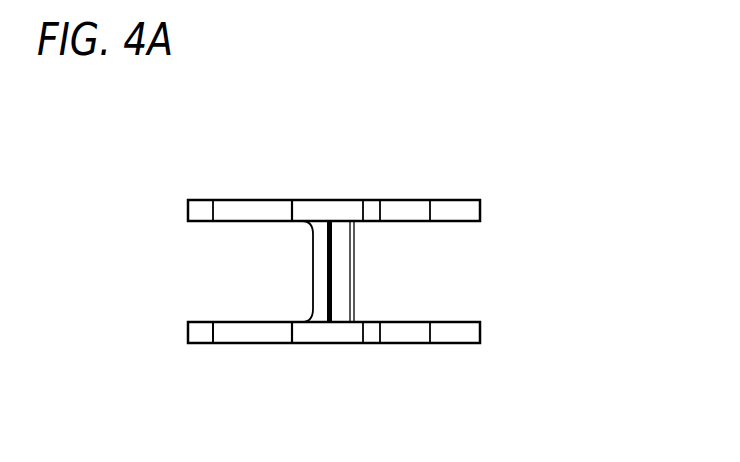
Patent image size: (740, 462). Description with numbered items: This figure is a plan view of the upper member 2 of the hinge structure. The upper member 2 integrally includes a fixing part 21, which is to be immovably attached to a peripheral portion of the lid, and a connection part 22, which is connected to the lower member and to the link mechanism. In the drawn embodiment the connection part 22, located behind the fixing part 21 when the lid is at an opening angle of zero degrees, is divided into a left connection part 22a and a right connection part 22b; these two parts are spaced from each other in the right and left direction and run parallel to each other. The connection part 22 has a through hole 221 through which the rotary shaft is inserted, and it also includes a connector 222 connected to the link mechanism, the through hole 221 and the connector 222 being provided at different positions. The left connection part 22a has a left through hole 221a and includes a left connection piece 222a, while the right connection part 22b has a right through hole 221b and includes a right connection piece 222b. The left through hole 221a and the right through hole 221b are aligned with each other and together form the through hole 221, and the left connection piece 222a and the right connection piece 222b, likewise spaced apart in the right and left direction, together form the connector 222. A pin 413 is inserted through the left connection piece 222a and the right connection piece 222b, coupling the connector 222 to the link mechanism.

The upper member 2 is at (225, 207).
The fixing part 21 is at (205, 330).
The connection part 22 is at (455, 405).
The left connection part 22a is at (375, 343).
The right connection part 22b is at (372, 205).
The through hole 221 is at (588, 235).
The left through hole 221a is at (422, 330).
The right through hole 221b is at (422, 212).
The connector 222 is at (383, 97).
The left connection piece 222a is at (324, 221).
The right connection piece 222b is at (304, 322).
The pin 413 is at (343, 233).